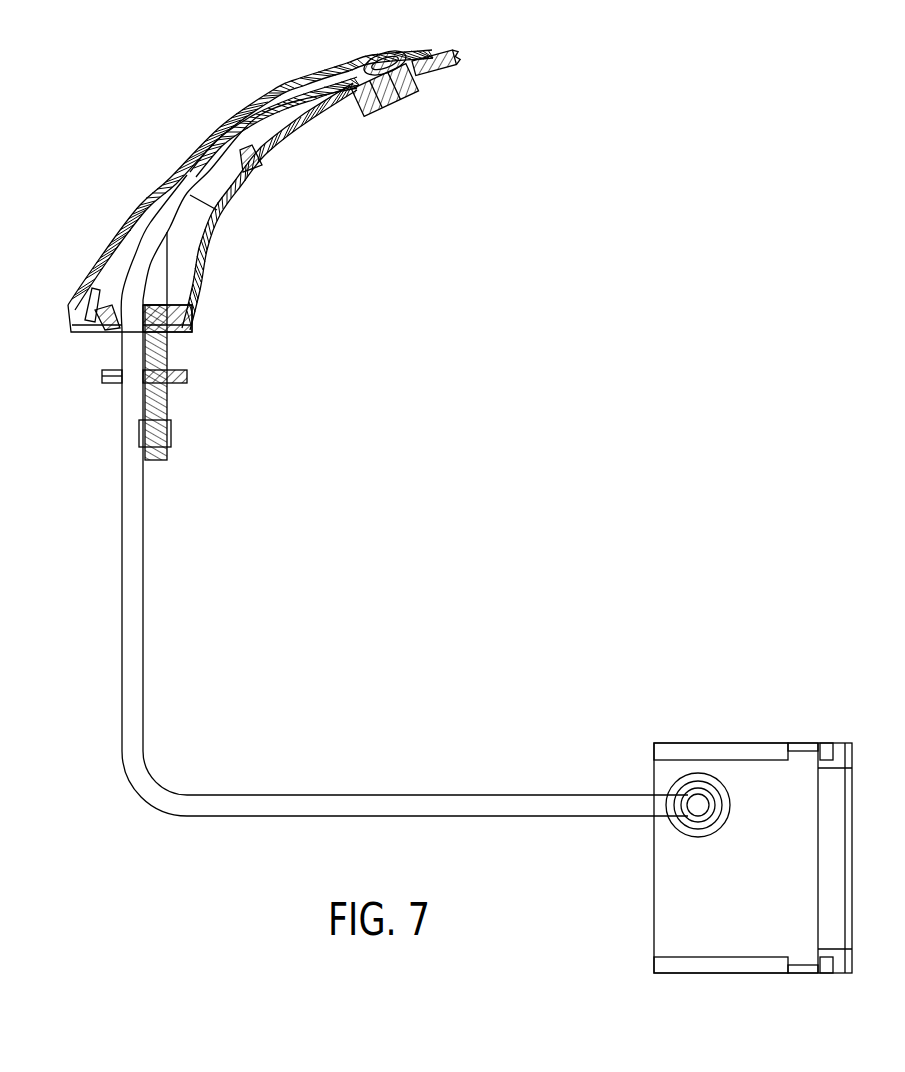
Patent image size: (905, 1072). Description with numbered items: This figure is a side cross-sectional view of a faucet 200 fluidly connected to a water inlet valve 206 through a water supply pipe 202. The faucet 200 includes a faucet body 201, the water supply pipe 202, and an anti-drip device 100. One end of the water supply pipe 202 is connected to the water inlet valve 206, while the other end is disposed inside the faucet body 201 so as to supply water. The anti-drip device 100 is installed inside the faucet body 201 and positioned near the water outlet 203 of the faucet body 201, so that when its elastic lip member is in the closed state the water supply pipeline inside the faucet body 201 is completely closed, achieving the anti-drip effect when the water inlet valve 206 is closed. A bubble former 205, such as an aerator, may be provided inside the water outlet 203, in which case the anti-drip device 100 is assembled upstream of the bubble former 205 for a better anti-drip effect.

The anti-drip device 100 is at (370, 57).
The faucet 200 is at (128, 178).
The faucet body 201 is at (226, 182).
The water supply pipe 202 is at (133, 561).
The water outlet 203 is at (376, 108).
The bubble former 205 is at (403, 105).
The water inlet valve 206 is at (693, 792).